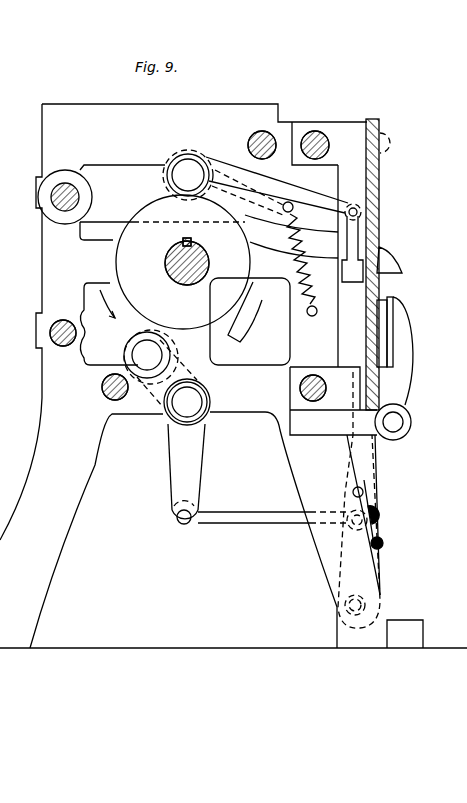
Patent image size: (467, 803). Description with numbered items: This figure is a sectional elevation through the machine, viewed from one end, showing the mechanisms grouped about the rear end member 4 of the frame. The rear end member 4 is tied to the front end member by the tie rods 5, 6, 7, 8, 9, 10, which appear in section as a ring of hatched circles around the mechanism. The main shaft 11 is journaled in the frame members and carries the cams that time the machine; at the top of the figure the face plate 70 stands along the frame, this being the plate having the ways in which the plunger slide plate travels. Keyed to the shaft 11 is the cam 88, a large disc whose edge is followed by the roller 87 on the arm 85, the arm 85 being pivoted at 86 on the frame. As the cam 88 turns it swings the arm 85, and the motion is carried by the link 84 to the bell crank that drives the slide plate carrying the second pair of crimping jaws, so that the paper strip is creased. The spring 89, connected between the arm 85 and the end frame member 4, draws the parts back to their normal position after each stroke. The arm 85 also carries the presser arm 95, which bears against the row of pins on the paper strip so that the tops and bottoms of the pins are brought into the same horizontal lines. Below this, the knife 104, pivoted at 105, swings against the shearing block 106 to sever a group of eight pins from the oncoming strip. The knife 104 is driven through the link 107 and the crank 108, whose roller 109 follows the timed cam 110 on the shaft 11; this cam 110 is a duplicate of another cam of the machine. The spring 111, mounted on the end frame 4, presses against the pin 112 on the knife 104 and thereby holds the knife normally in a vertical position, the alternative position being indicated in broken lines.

The rear end member 4 is at (41, 278).
The tie rod 5 is at (68, 184).
The tie rod 6 is at (252, 139).
The tie rod 7 is at (316, 132).
The tie rod 8 is at (313, 375).
The tie rod 9 is at (101, 389).
The tie rod 10 is at (77, 335).
The shaft 11 is at (190, 279).
The face plate 70 is at (377, 120).
The link 84 is at (356, 229).
The arm 85 is at (237, 188).
The pivot 86 is at (162, 183).
The roller 87 is at (189, 152).
The cam 88 is at (113, 260).
The spring 89 is at (305, 310).
The presser arm 95 is at (390, 254).
The knife 104 is at (388, 313).
The pivot 105 is at (366, 603).
The shearing block 106 is at (393, 324).
The link 107 is at (240, 524).
The crank 108 is at (198, 481).
The roller 109 is at (132, 344).
The timed cam 110 is at (241, 316).
The spring 111 is at (375, 500).
The pin 112 is at (352, 493).